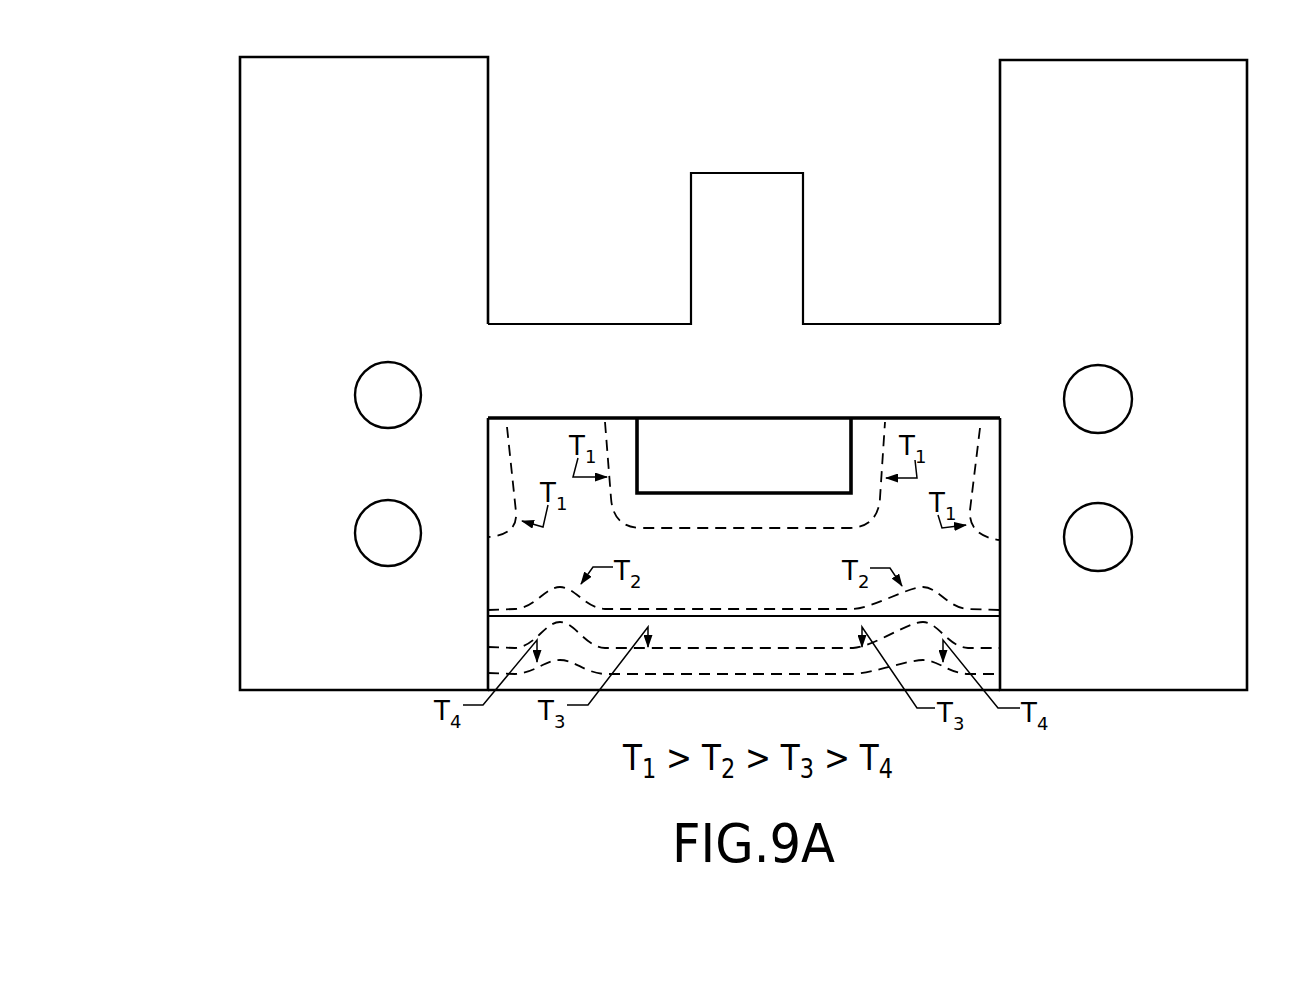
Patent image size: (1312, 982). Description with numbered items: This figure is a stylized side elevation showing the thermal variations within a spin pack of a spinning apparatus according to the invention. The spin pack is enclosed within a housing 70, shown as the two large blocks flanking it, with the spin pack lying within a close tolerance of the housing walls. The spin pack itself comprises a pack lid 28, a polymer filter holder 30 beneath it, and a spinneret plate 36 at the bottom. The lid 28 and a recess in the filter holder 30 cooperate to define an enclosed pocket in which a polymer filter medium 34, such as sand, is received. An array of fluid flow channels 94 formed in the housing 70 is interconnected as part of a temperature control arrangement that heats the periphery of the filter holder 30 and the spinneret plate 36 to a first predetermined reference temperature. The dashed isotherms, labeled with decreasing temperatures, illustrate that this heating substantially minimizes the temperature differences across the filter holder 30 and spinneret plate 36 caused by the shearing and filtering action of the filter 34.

The housing 70 is at (453, 168).
The pack lid 28 is at (715, 238).
The polymer filter medium 34 is at (733, 443).
The fluid flow channels 94 is at (373, 403).
The polymer filter holder 30 is at (963, 573).
The spinneret plate 36 is at (1003, 651).